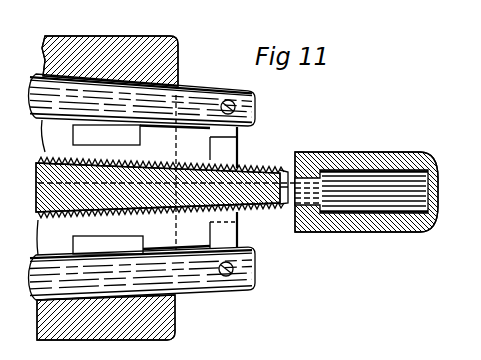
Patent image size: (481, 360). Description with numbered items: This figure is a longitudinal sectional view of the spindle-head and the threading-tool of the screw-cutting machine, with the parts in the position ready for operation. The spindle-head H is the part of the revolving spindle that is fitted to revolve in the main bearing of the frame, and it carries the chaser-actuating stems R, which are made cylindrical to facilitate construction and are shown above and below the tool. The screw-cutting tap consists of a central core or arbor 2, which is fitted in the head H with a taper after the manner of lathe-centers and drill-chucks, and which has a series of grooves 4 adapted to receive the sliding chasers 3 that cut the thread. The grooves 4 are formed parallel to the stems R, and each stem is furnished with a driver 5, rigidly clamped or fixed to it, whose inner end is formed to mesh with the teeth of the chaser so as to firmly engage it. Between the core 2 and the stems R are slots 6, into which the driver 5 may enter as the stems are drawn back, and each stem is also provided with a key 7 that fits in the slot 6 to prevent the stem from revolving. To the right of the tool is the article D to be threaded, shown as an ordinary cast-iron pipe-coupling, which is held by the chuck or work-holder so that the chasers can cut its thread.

The chaser-actuating stem R is at (100, 107).
The spindle-head H is at (163, 46).
The article to be threaded D is at (375, 153).
The central core or arbor 2 is at (192, 163).
The sliding chaser 3 is at (48, 212).
The groove 4 is at (36, 178).
The driver 5 is at (223, 187).
The slot 6 is at (175, 172).
The key 7 is at (108, 189).